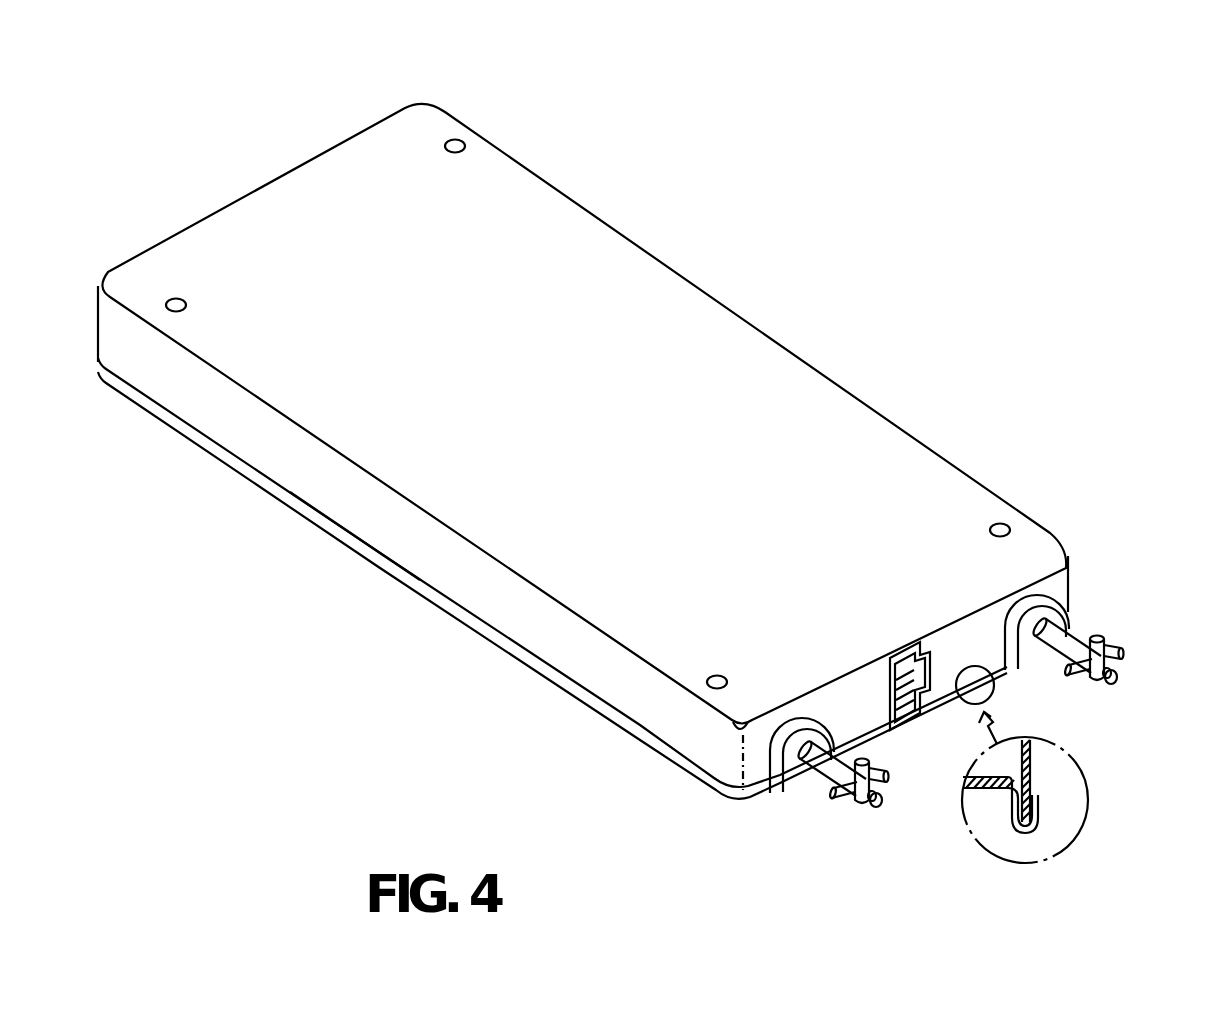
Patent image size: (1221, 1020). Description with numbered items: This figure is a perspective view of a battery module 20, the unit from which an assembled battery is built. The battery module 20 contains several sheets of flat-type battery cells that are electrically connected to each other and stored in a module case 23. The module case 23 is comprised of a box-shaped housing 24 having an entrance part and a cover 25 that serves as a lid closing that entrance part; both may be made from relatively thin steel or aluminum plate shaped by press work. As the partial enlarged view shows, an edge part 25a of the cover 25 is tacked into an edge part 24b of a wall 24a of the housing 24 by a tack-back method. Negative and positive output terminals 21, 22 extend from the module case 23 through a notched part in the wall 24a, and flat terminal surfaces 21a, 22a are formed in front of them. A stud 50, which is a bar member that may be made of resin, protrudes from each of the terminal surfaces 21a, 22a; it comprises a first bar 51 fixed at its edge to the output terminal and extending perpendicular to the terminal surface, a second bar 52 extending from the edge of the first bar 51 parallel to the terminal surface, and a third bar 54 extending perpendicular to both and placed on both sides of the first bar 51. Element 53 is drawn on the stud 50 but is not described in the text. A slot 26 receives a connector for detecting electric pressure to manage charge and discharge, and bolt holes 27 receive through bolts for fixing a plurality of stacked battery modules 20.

The battery module 20 is at (218, 142).
The negative output terminal 21 is at (796, 720).
The terminal surface 21a is at (803, 772).
The positive output terminal 22 is at (1030, 597).
The terminal surface 22a is at (1068, 610).
The module case 23 is at (433, 683).
The housing 24 is at (366, 508).
The wall 24a is at (247, 456).
The edge part 24b is at (1040, 778).
The cover 25 is at (436, 613).
The edge part 25a is at (1040, 808).
The slot 26 is at (900, 718).
The bolt hole 27 is at (187, 305).
The stud 50 is at (853, 822).
The first bar 51 is at (845, 762).
The second bar 52 is at (885, 776).
The fitting nut 53 is at (882, 805).
The third bar 54 is at (838, 797).